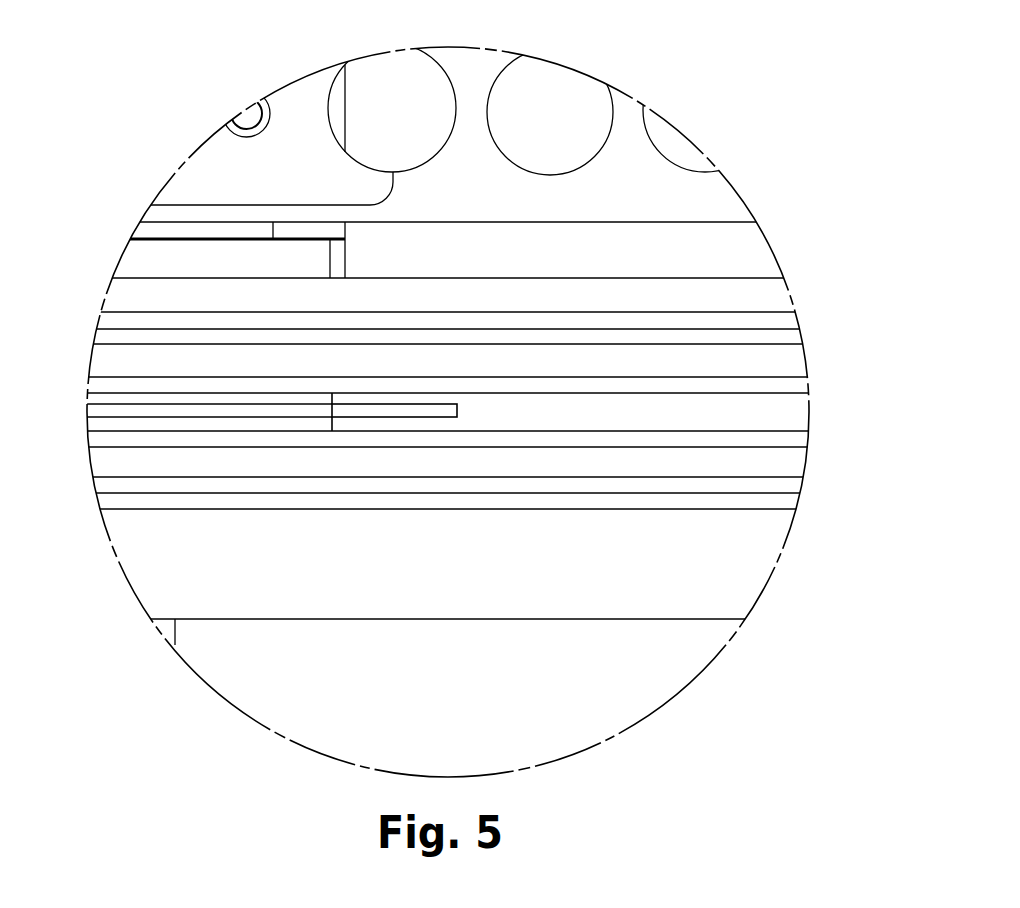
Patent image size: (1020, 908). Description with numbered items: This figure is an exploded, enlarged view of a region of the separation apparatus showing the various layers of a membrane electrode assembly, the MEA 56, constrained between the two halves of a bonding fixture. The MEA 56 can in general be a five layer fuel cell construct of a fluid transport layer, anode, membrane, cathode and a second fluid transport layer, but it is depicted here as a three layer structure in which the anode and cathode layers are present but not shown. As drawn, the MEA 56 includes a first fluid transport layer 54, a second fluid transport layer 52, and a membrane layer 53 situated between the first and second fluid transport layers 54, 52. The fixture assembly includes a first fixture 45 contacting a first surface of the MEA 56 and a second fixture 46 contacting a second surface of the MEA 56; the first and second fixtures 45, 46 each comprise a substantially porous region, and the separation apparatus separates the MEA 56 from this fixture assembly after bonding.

The first fixture 45 is at (218, 477).
The second fixture 46 is at (177, 343).
The second fluid transport layer 52 is at (333, 400).
The membrane layer 53 is at (457, 410).
The first fluid transport layer 54 is at (333, 422).
The MEA 56 is at (82, 392).